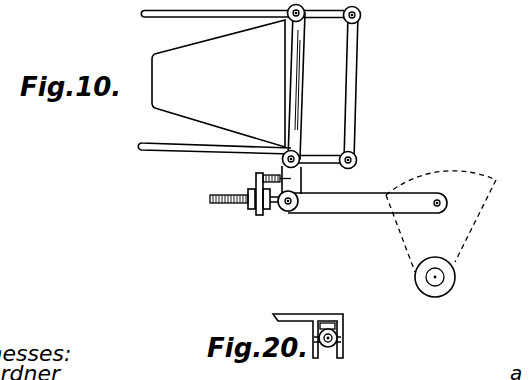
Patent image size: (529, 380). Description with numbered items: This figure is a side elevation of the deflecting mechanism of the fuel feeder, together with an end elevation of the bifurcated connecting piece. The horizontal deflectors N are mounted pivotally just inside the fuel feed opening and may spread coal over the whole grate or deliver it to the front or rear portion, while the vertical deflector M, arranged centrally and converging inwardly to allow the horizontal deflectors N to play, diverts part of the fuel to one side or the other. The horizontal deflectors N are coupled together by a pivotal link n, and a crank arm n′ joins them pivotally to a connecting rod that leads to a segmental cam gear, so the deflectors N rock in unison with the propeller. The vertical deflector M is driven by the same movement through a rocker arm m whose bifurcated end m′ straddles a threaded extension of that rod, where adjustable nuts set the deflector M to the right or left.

In FIG. 10, the horizontal deflectors N is at (217, 84).
In FIG. 10, the vertical deflector M is at (218, 83).
In FIG. 10, the pivotal link n is at (327, 87).
In FIG. 10, the crank arm n′ is at (300, 180).
In FIG. 10, the rocker arm m is at (264, 189).
In FIG. 20, the rocker arm m is at (308, 327).
In FIG. 10, the bifurcated end m′ is at (244, 228).
In FIG. 20, the bifurcated end m′ is at (340, 345).